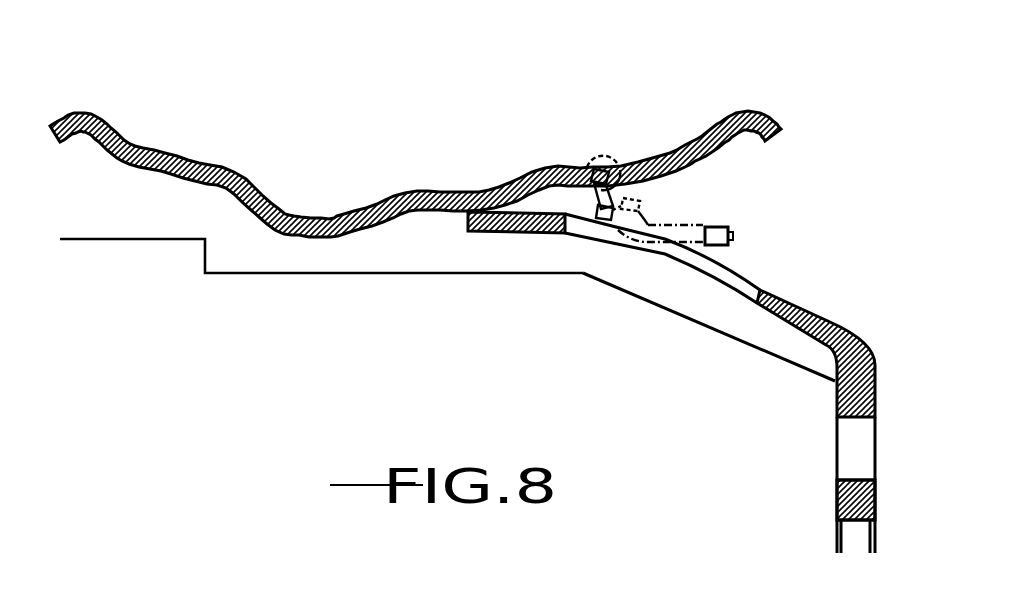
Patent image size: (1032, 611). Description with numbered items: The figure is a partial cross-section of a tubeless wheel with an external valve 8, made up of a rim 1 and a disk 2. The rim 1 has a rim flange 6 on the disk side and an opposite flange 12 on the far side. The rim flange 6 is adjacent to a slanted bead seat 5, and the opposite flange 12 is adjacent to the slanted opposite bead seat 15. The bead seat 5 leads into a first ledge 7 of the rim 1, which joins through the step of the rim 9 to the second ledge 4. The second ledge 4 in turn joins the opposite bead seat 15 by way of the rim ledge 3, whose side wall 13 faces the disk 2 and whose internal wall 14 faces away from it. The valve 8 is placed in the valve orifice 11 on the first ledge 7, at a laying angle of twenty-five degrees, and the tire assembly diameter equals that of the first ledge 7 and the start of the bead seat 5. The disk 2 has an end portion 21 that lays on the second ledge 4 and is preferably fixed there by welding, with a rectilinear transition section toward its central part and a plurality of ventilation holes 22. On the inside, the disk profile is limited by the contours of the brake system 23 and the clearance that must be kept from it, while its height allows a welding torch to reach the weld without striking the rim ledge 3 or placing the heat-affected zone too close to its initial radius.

The rim 1 is at (114, 182).
The disk 2 is at (838, 400).
The rim ledge 3 is at (327, 240).
The second ledge 4 is at (447, 192).
The bead seat 5 is at (663, 153).
The rim flange 6 is at (758, 109).
The first ledge 7 is at (547, 167).
The external valve 8 is at (735, 233).
The step of the rim 9 is at (517, 178).
The valve orifice 11 is at (623, 190).
The opposite flange 12 is at (82, 112).
The side wall 13 is at (393, 200).
The internal wall 14 is at (229, 174).
The opposite bead seat 15 is at (163, 155).
The end portion 21 is at (483, 222).
The ventilation holes 22 is at (614, 234).
The brake system 23 is at (147, 240).